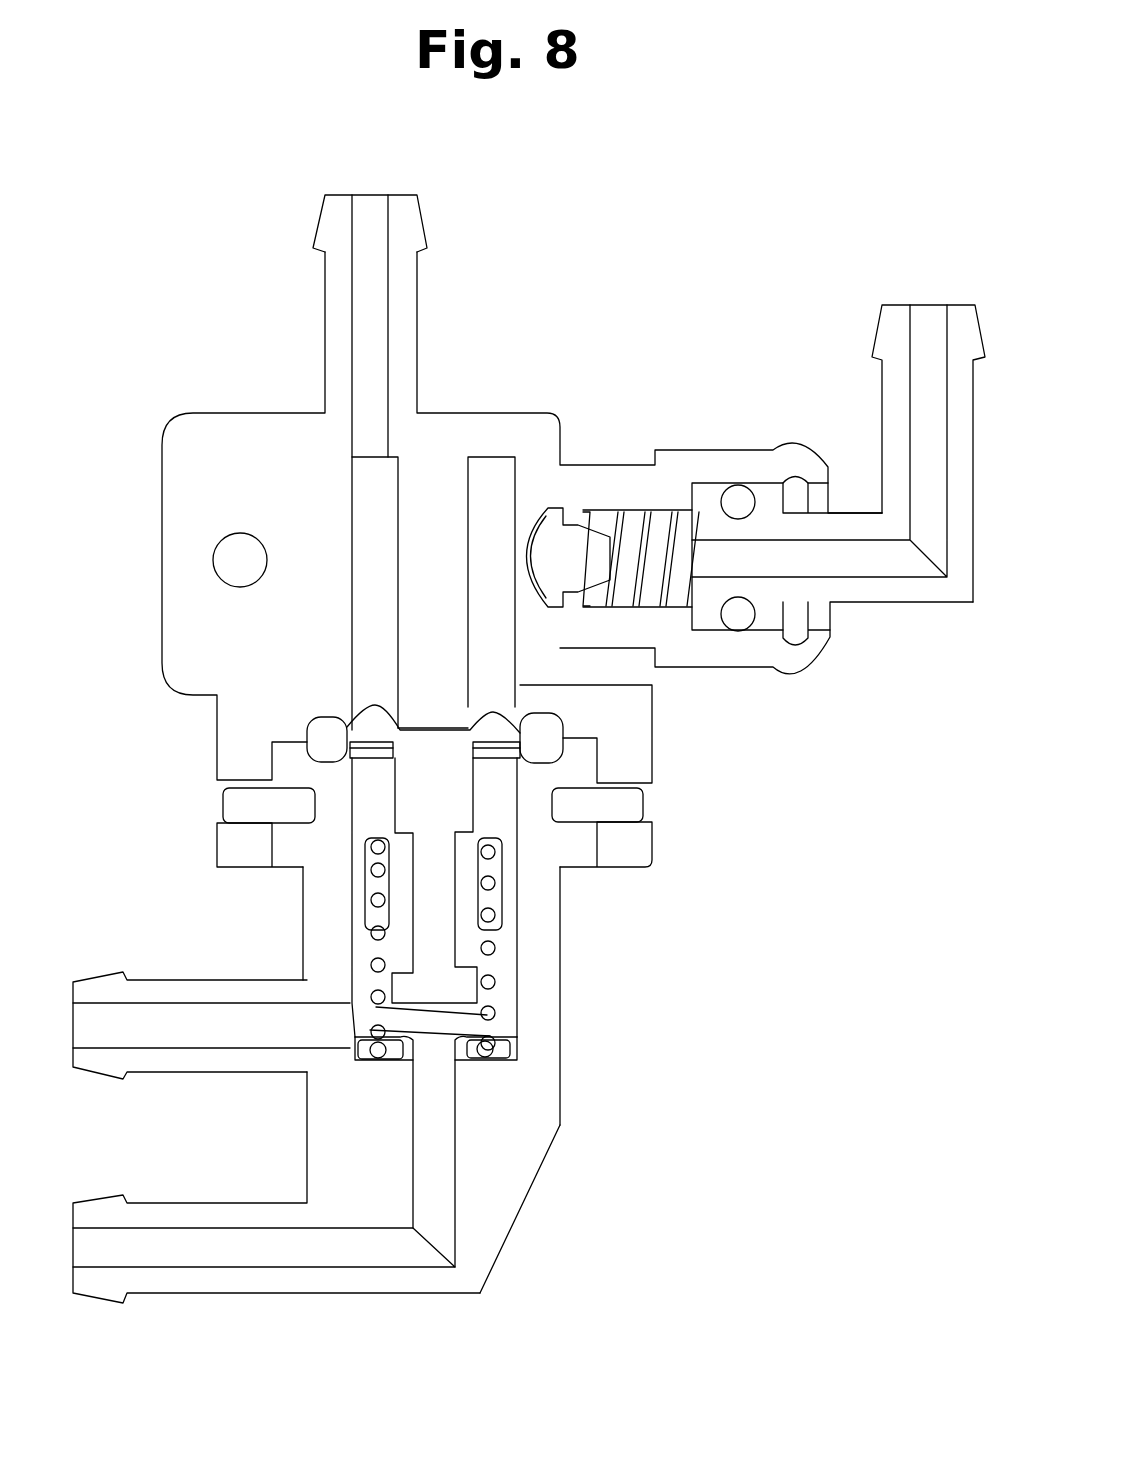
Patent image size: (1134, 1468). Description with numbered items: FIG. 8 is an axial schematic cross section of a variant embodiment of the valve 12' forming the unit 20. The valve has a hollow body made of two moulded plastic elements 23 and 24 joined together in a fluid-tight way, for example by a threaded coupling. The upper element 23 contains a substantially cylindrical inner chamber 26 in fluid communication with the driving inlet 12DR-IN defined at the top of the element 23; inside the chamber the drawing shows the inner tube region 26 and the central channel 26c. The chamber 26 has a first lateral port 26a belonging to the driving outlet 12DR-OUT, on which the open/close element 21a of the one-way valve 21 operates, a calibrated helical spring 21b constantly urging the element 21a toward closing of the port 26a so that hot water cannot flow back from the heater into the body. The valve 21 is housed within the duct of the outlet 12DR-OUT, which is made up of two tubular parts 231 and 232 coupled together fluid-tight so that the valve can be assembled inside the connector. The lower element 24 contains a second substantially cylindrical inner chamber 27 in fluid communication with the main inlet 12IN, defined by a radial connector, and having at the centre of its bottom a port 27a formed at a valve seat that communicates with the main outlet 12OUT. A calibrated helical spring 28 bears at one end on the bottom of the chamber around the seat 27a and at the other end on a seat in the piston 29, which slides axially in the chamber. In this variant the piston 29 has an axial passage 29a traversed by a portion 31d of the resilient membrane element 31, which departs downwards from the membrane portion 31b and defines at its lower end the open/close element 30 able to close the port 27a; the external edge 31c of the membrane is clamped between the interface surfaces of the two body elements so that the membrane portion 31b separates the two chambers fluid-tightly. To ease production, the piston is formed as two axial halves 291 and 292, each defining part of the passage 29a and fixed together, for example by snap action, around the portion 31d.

The valve 12' is at (293, 249).
The driving inlet 12DR-IN is at (373, 307).
The driving outlet 12DR-OUT is at (927, 323).
The main inlet 12IN is at (208, 1022).
The main outlet 12OUT is at (278, 1247).
The unit 20 is at (742, 935).
The one-way valve 21 is at (633, 490).
The open/close element 21a is at (570, 530).
The calibrated helical spring 21b is at (653, 590).
The element 23 is at (243, 407).
The tubular part 231 is at (807, 658).
The tubular part 232 is at (845, 587).
The element 24 is at (497, 1258).
The inner chamber 26 is at (355, 503).
The first lateral port 26a is at (503, 540).
The channel 26c is at (418, 562).
The inner chamber 27 is at (362, 975).
The port 27a is at (427, 1043).
The calibrated helical spring 28 is at (495, 1012).
The piston 29 is at (348, 818).
The axial part 291 is at (372, 800).
The axial part 292 is at (482, 795).
The axial passage 29a is at (453, 990).
The open/close element 30 is at (438, 948).
The membrane element 31 is at (377, 690).
The membrane portion 31b is at (540, 712).
The external edge 31c is at (323, 717).
The portion 31d is at (437, 898).